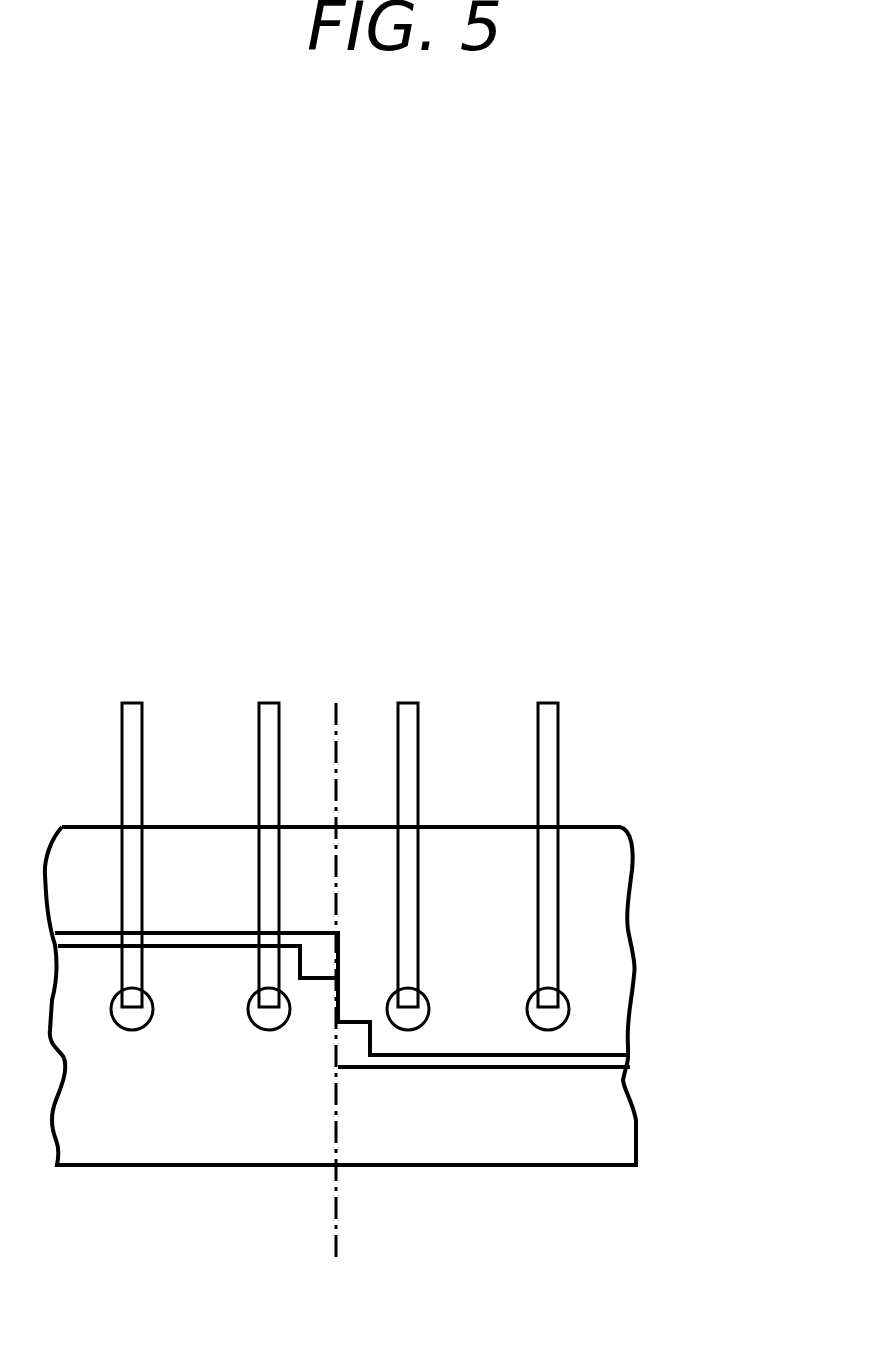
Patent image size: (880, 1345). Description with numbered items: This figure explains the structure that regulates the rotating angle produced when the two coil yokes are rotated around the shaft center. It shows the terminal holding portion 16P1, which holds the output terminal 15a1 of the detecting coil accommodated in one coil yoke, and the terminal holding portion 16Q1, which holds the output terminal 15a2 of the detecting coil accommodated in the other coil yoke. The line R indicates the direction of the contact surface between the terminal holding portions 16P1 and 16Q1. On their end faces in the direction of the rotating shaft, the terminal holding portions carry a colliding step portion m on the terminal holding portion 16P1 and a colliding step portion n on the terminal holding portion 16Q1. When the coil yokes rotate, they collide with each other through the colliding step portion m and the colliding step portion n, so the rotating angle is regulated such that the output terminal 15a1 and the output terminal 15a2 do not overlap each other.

The output terminal 15a1 is at (270, 703).
The output terminal 15a2 is at (548, 703).
The terminal holding portion 16P1 is at (605, 885).
The terminal holding portion 16Q1 is at (605, 1125).
The colliding step portion m is at (336, 1040).
The colliding step portion n is at (338, 960).
The line R is at (336, 1248).